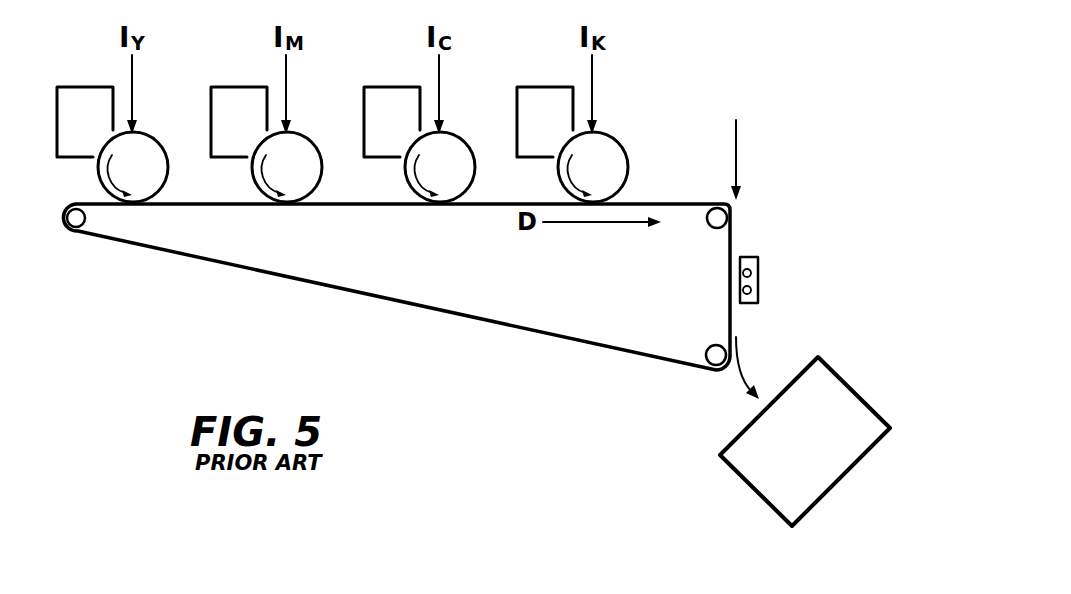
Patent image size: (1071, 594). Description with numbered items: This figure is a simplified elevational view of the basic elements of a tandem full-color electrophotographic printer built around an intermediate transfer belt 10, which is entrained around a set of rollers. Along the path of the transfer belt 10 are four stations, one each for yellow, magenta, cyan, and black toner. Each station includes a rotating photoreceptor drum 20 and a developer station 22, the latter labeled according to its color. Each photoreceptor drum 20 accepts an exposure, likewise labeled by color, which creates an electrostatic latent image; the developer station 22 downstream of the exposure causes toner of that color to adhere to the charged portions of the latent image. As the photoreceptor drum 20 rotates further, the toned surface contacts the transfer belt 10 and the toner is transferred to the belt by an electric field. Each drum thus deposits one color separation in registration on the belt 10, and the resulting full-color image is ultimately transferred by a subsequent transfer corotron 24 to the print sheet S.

The intermediate transfer belt 10 is at (482, 322).
The photoreceptor drum 20 is at (143, 133).
The developer station 22 is at (57, 98).
The transfer corotron 24 is at (760, 277).
The print sheet S is at (798, 368).